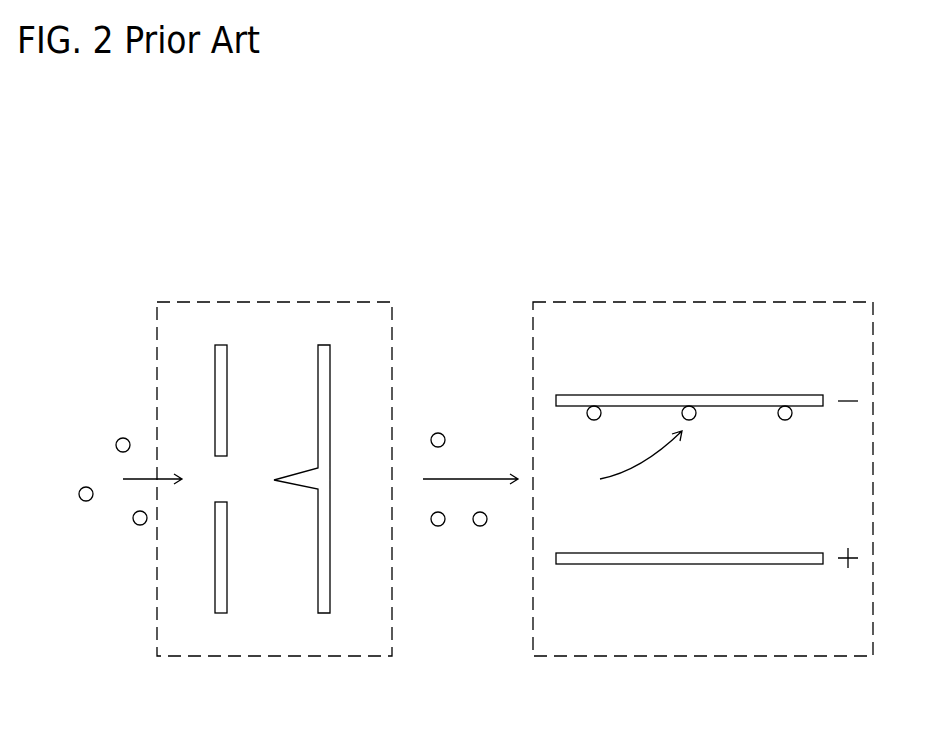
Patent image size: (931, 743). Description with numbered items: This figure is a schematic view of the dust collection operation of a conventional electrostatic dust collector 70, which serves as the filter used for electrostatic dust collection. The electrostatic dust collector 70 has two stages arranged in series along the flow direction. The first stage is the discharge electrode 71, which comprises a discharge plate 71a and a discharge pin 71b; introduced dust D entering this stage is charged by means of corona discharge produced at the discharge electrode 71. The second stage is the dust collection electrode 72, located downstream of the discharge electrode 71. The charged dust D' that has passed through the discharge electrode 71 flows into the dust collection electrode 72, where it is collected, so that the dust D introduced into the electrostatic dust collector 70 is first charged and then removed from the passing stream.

The electrostatic dust collector 70 is at (641, 188).
The discharge electrode 71 is at (353, 302).
The discharge plate 71a is at (220, 613).
The discharge pin 71b is at (323, 613).
The dust collection electrode 72 is at (835, 302).
The introduced dust D is at (105, 494).
The charged dust D' is at (470, 451).